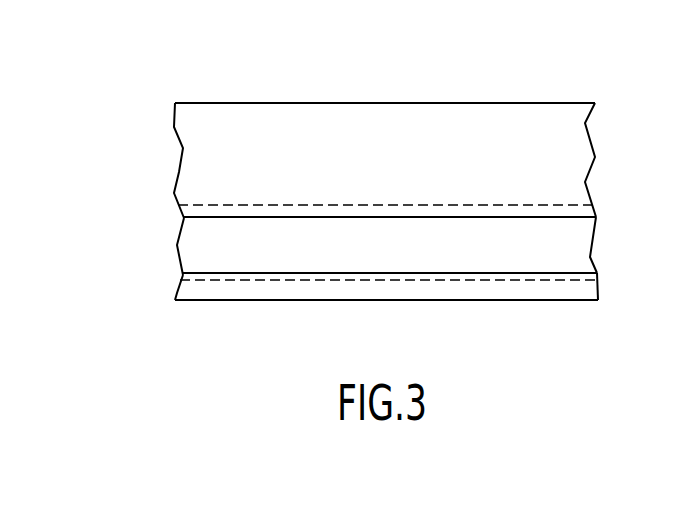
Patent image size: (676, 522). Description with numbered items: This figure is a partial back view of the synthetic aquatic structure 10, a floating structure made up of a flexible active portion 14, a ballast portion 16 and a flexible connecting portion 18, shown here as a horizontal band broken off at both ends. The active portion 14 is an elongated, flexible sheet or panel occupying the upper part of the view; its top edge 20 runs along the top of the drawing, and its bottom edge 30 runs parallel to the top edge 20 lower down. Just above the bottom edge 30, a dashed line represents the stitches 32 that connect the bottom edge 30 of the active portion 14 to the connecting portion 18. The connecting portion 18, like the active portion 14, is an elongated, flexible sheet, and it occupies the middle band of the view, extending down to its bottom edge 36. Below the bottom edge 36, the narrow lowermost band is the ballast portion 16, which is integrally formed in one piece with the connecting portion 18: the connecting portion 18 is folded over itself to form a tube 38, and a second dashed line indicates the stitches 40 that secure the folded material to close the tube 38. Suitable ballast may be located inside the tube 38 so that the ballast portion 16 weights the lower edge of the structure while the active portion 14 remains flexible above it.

The synthetic aquatic structure 10 is at (331, 207).
The flexible active portion 14 is at (385, 126).
The ballast portion 16 is at (517, 301).
The flexible connecting portion 18 is at (387, 212).
The top edge 20 is at (546, 102).
The bottom edge 30 is at (338, 216).
The stitches 32 is at (437, 204).
The bottom edge 36 is at (461, 272).
The tube 38 is at (386, 302).
The stitches 40 is at (378, 281).